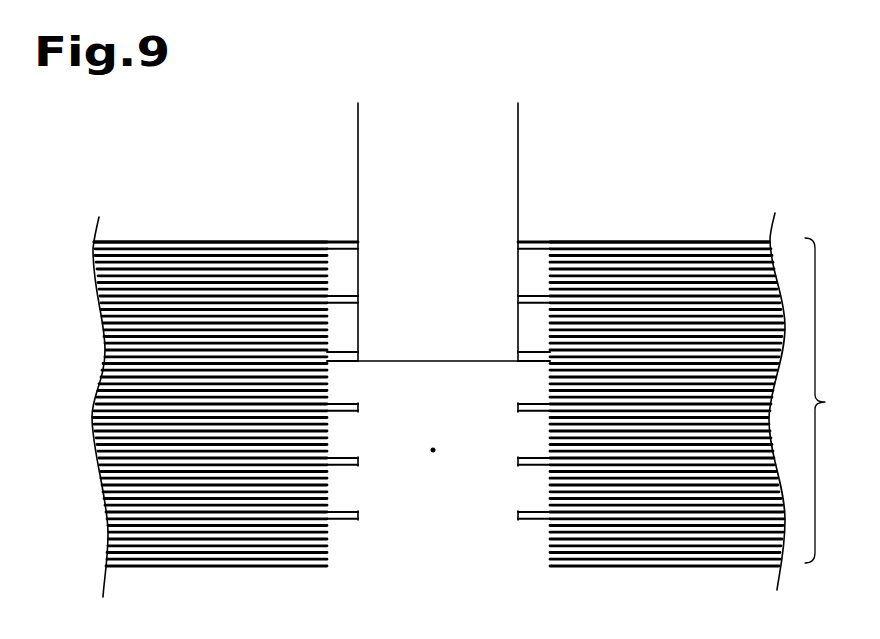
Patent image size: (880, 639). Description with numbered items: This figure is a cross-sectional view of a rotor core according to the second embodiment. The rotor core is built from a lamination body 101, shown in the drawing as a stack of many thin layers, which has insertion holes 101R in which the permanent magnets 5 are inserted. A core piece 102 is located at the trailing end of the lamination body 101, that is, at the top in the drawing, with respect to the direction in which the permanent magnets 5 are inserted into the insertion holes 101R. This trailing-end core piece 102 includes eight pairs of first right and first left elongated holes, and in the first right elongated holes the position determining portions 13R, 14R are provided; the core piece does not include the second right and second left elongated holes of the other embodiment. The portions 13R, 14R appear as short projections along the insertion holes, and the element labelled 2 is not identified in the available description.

The stator core laminations 2 is at (163, 252).
The core piece 102 is at (224, 242).
The position determining portion 13R is at (358, 515).
The position determining portion 14R is at (485, 313).
The permanent magnet 5 is at (418, 348).
The insertion hole 101R is at (433, 453).
The lamination body 101 is at (839, 400).